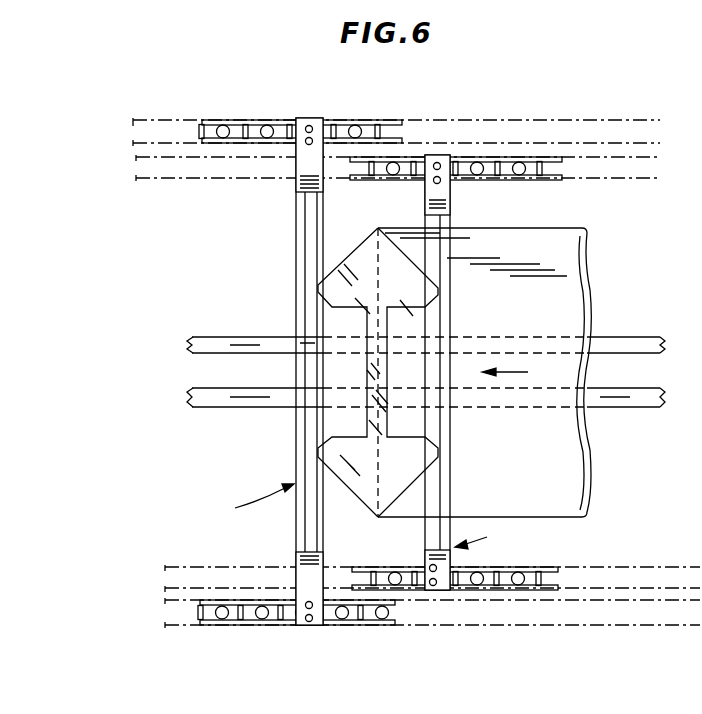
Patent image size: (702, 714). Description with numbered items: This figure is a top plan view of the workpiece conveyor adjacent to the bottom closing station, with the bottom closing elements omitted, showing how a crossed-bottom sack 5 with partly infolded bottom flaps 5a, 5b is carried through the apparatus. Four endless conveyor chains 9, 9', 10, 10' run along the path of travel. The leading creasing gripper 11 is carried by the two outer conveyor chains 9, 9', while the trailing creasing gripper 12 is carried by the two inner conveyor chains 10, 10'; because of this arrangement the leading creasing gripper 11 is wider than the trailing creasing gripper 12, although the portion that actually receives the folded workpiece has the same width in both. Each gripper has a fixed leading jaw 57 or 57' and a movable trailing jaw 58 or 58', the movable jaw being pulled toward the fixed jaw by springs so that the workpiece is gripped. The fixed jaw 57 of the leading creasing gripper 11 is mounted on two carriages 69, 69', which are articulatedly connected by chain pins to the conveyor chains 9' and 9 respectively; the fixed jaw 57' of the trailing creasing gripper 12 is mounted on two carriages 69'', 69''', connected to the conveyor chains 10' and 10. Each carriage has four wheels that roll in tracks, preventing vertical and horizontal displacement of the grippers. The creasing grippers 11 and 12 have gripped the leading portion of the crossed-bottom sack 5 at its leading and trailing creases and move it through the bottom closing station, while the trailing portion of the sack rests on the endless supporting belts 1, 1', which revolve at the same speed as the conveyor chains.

The endless supporting belt 1 is at (424, 327).
The endless supporting belt 1' is at (423, 415).
The workpiece (crossed-bottom sack) 5 is at (580, 283).
The bottom flap 5a is at (412, 418).
The bottom flap 5b is at (330, 318).
The endless conveyor chain 9 is at (300, 113).
The endless conveyor chain 9' is at (296, 630).
The endless conveyor chain 10 is at (456, 187).
The endless conveyor chain 10' is at (455, 612).
The leading creasing gripper 11 is at (251, 498).
The trailing creasing gripper 12 is at (487, 541).
The fixed leading jaw 57 is at (285, 371).
The fixed leading jaw 57' is at (415, 372).
The movable trailing jaw 58 is at (332, 372).
The movable trailing jaw 58' is at (471, 372).
The carriage 69 is at (319, 606).
The carriage 69' is at (319, 138).
The carriage 69'' is at (440, 605).
The carriage 69''' is at (454, 150).